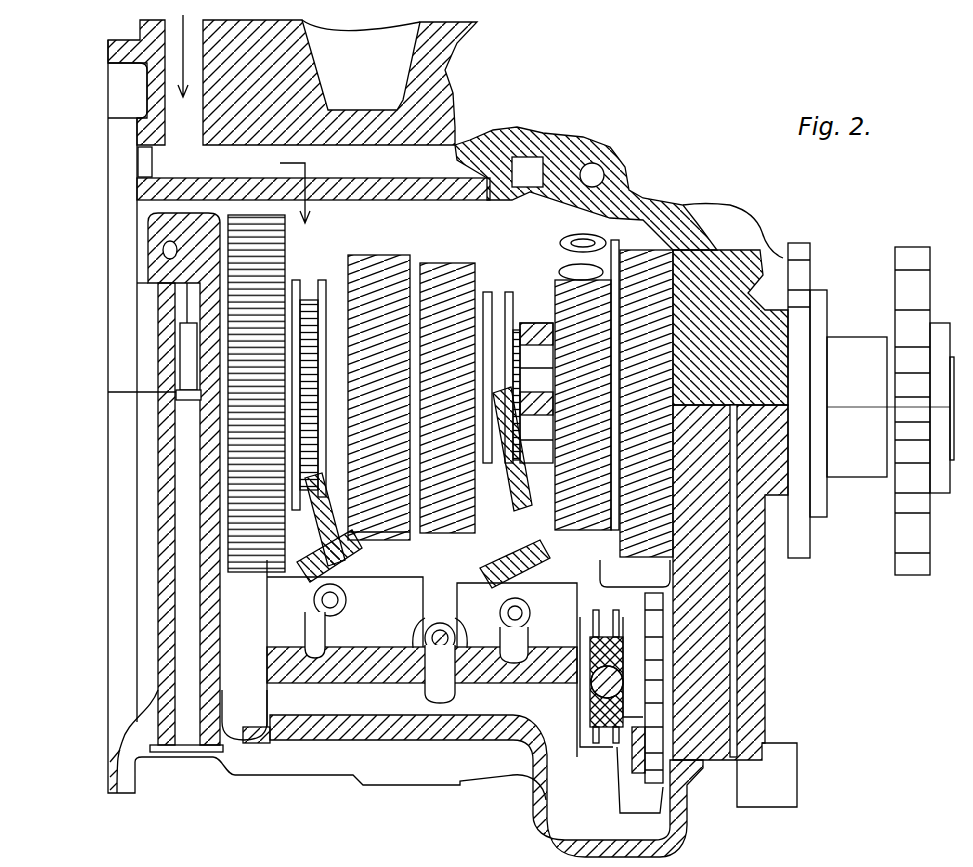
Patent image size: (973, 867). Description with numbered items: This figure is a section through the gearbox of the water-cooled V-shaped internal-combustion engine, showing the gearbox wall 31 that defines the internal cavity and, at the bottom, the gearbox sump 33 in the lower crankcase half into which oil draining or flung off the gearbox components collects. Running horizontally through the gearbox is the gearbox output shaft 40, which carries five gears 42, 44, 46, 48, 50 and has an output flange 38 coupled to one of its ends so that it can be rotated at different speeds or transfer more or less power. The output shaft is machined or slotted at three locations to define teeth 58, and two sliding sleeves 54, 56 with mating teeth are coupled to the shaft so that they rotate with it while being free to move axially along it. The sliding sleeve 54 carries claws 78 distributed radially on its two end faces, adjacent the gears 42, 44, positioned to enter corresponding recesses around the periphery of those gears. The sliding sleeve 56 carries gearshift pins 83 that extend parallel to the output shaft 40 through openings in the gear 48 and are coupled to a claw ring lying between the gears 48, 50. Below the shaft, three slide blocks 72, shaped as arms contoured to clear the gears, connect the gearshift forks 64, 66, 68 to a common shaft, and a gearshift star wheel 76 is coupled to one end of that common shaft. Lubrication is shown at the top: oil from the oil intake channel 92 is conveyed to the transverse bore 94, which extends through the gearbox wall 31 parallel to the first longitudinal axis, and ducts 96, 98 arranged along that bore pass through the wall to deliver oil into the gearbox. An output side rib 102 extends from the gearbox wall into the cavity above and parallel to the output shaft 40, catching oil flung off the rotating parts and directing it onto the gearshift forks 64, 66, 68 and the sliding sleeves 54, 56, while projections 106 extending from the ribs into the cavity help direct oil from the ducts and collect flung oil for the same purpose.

The gearbox wall 31 is at (250, 200).
The gearbox sump 33 is at (567, 780).
The output flange 38 is at (910, 260).
The gearbox output shaft 40 is at (866, 342).
The gear 42 is at (233, 527).
The gear 44 is at (366, 578).
The gear 46 is at (451, 508).
The gear 48 is at (577, 503).
The gear 50 is at (648, 255).
The sliding sleeve 54 is at (317, 285).
The sliding sleeve 56 is at (560, 278).
The teeth 58 is at (330, 438).
The gearshift fork 64 is at (303, 587).
The gearshift fork 66 is at (500, 603).
The gearshift fork 68 is at (423, 624).
The slide block 72 is at (305, 638).
The gearshift star wheel 76 is at (660, 613).
The claws 78 is at (290, 300).
The gearshift pins 83 is at (540, 330).
The oil intake channel 92 is at (177, 117).
The transverse bore 94 is at (458, 153).
The duct 96 is at (307, 181).
The duct 98 is at (503, 187).
The output side rib 102 is at (367, 217).
The projections 106 is at (300, 242).